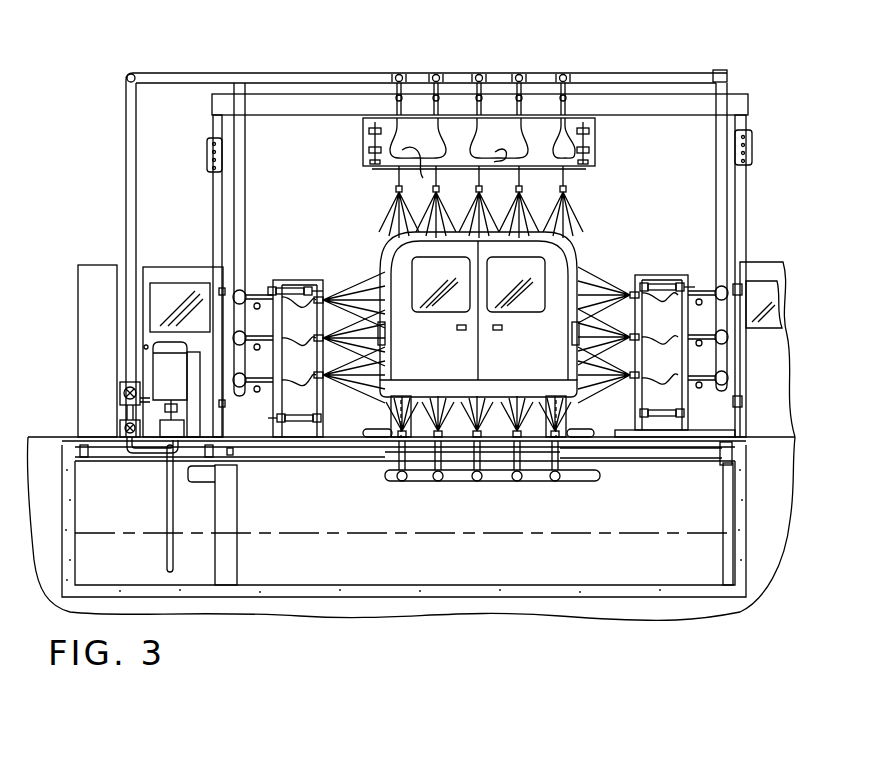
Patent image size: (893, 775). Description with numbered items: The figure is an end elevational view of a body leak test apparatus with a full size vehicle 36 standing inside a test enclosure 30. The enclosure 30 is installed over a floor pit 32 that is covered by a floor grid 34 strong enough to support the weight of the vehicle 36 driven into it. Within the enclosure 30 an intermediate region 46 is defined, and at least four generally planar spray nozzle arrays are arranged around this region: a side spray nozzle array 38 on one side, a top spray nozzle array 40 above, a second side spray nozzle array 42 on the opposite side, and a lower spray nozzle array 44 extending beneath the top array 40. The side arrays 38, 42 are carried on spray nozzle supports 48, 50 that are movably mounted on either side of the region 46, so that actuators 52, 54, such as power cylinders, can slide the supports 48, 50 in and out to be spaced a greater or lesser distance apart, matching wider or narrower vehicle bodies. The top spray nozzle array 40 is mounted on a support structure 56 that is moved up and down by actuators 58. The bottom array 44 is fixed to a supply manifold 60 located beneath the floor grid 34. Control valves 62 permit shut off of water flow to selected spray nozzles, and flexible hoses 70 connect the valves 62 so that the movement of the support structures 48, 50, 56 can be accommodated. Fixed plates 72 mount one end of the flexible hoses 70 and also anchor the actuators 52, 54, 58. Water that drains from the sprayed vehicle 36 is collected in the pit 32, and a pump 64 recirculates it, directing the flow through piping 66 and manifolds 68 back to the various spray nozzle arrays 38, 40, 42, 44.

The test enclosure 30 is at (745, 94).
The floor pit 32 is at (396, 521).
The floor grid 34 is at (386, 451).
The vehicle 36 is at (477, 314).
The side spray nozzle array 38 is at (378, 262).
The top spray nozzle array 40 is at (381, 202).
The side spray nozzle array 42 is at (613, 279).
The bottom spray nozzle array 44 is at (568, 453).
The intermediate region 46 is at (388, 248).
The spray nozzle support 48 is at (326, 405).
The spray nozzle support 50 is at (630, 397).
The actuator 52 is at (295, 289).
The actuator 54 is at (655, 280).
The support structure 56 is at (596, 176).
The actuator 58 is at (369, 137).
The supply manifold 60 is at (493, 484).
The control valve 62 is at (396, 95).
The pump 64 is at (150, 372).
The piping 66 is at (123, 155).
The manifold 68 is at (455, 80).
The flexible hose 70 is at (571, 114).
The fixed plate 72 is at (381, 109).